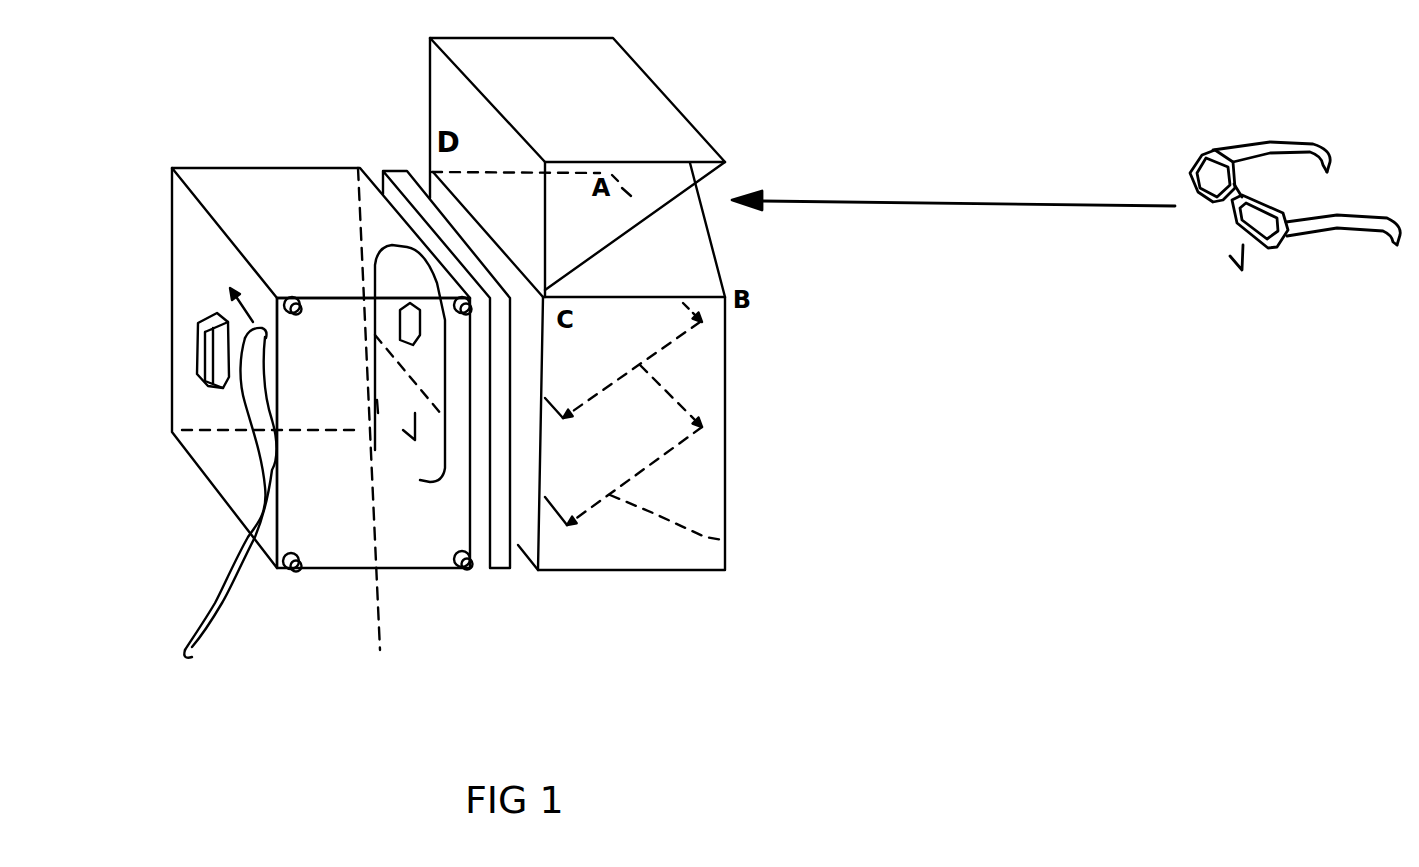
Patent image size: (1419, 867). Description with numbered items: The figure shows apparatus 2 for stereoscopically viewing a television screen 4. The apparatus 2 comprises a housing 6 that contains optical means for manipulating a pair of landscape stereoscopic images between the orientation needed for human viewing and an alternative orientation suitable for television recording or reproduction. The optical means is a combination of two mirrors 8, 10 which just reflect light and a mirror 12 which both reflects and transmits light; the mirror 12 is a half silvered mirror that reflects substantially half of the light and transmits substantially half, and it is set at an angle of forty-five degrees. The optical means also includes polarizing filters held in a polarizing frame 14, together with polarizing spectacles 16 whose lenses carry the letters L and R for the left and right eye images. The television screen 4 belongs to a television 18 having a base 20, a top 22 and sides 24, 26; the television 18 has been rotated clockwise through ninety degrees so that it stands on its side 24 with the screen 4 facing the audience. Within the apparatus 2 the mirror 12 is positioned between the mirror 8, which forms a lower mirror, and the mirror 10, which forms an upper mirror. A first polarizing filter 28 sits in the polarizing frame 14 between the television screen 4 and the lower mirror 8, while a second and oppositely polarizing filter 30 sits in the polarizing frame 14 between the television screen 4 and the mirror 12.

The apparatus 2 is at (690, 82).
The television screen 4 is at (420, 466).
The housing 6 is at (736, 473).
The mirror 8 is at (723, 540).
The mirror 10 is at (663, 192).
The mirror 12 is at (640, 358).
The polarizing frame 14 is at (493, 568).
The polarizing spectacles 16 is at (1337, 209).
The television 18 is at (162, 258).
The base 20 is at (328, 538).
The top 22 is at (190, 221).
The side 24 is at (233, 503).
The side 26 is at (272, 190).
The first polarizing filter 28 is at (381, 427).
The second polarizing filter 30 is at (395, 280).